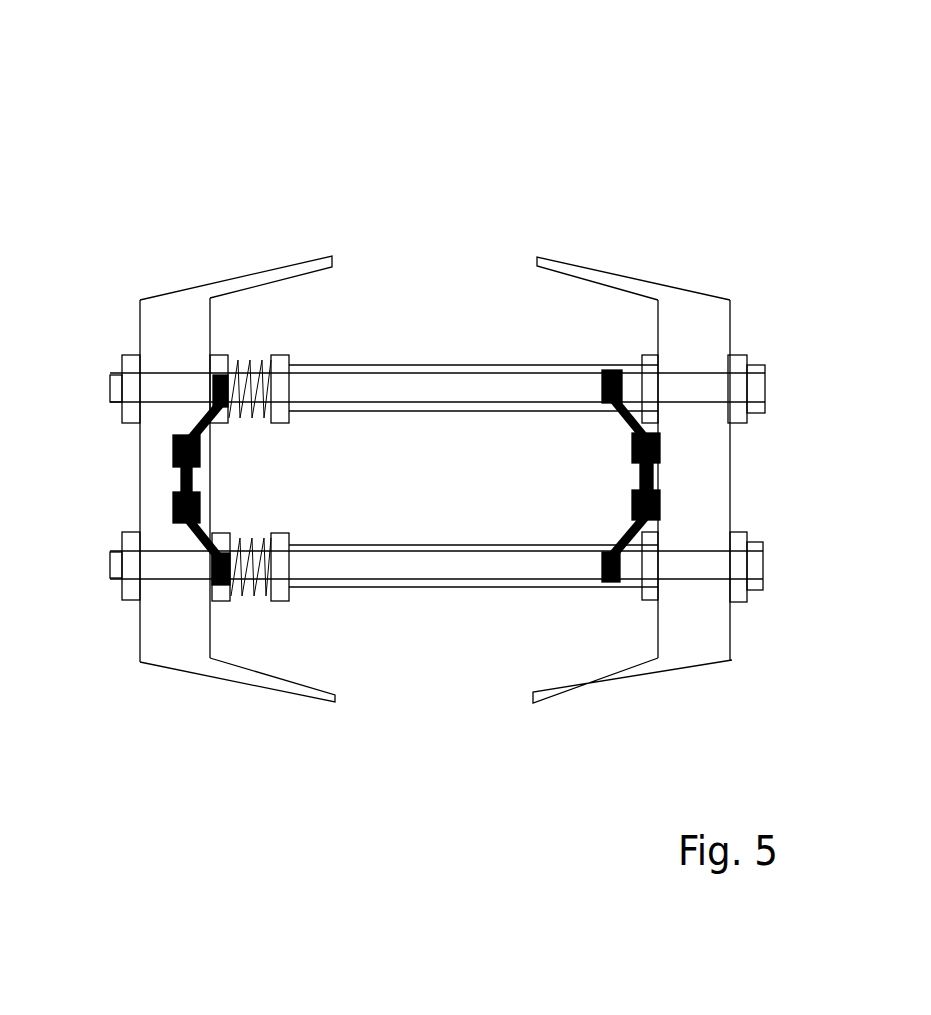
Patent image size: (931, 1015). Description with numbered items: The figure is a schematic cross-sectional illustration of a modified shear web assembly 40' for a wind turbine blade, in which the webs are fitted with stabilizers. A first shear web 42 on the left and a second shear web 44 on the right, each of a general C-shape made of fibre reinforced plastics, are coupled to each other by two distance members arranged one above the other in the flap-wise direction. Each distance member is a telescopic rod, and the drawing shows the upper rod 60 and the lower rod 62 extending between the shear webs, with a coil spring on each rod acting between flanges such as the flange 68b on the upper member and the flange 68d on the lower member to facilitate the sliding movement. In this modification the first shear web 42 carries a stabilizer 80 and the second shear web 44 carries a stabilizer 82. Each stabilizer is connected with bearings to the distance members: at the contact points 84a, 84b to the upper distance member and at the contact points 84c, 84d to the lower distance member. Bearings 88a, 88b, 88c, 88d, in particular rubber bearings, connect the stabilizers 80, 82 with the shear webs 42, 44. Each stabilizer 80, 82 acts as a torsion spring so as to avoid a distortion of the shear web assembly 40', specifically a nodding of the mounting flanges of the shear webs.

The shear web assembly 40' is at (425, 83).
The first shear web 42 is at (153, 490).
The second shear web 44 is at (707, 472).
The rod 60 is at (492, 390).
The rod 62 is at (480, 568).
The flange 68b is at (225, 362).
The flange 68d is at (225, 595).
The stabilizer 80 is at (200, 560).
The stabilizer 82 is at (628, 418).
The contact point 84a is at (218, 375).
The contact point 84b is at (604, 370).
The contact point 84c is at (220, 590).
The contact point 84d is at (625, 578).
The bearing 88a is at (200, 445).
The bearing 88b is at (632, 444).
The bearing 88c is at (200, 500).
The bearing 88d is at (632, 504).